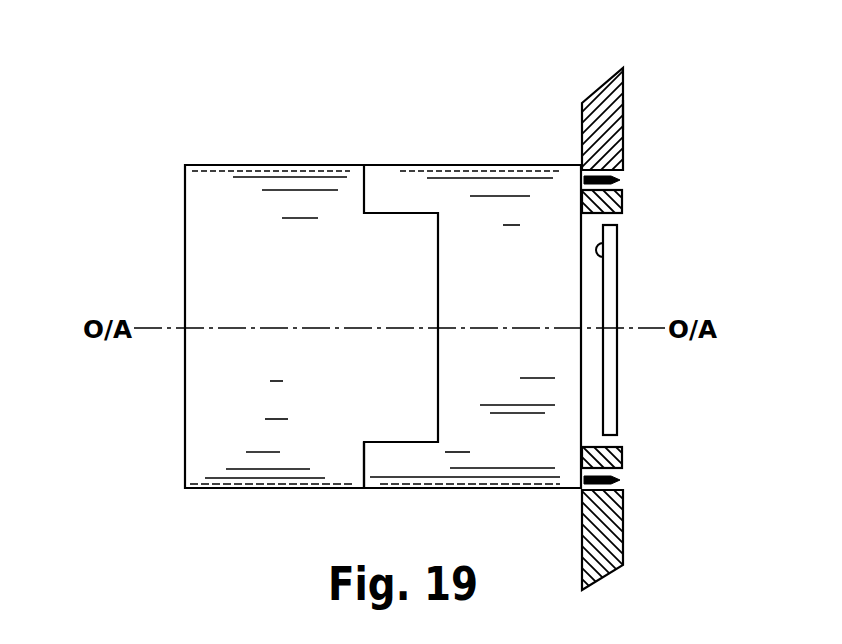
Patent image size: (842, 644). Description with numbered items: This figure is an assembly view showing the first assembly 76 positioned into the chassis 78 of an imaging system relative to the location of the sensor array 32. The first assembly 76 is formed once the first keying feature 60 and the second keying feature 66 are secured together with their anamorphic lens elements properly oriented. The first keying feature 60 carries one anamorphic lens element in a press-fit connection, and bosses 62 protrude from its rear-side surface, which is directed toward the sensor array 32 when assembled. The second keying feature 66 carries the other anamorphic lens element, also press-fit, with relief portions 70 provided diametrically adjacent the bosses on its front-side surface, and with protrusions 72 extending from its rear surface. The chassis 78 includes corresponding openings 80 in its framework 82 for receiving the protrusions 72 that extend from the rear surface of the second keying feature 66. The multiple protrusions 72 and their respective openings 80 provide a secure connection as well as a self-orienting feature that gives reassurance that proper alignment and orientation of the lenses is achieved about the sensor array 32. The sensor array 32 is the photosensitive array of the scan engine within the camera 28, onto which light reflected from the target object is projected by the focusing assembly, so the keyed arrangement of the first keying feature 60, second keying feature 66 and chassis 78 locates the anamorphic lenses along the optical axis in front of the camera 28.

The camera 28 is at (618, 286).
The sensor array 32 is at (603, 245).
The first keying feature 60 is at (220, 210).
The bosses 62 is at (407, 373).
The second keying feature 66 is at (468, 200).
The relief portions 70 is at (417, 452).
The protrusions 72 is at (620, 182).
The first assembly 76 is at (364, 121).
The chassis 78 is at (606, 100).
The openings 80 is at (620, 188).
The framework 82 is at (627, 117).